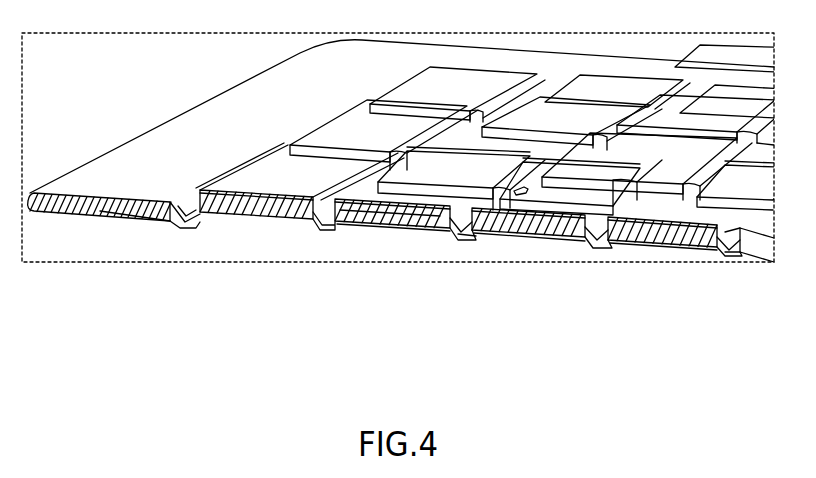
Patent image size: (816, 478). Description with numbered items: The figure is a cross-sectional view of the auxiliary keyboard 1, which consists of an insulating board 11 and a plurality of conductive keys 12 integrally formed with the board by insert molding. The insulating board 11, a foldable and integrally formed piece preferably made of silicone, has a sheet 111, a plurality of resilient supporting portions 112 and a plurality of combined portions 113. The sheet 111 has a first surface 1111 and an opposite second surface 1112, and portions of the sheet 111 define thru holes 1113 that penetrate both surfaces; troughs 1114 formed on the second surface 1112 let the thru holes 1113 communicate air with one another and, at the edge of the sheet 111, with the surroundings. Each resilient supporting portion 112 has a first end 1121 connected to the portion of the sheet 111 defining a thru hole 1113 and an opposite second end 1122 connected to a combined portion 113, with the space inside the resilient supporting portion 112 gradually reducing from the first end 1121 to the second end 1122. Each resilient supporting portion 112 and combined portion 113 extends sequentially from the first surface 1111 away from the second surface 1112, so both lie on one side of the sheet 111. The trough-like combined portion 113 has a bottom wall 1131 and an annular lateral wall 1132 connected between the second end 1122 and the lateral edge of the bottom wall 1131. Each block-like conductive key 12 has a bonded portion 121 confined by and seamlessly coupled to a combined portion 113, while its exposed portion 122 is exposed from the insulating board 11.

The auxiliary keyboard 1 is at (60, 70).
The insulating board 11 is at (194, 141).
The sheet 111 is at (135, 283).
The first surface 1111 is at (140, 222).
The second surface 1112 is at (174, 224).
The thru holes 1113 is at (197, 219).
The conductive key 12 is at (386, 286).
The bonded portion 121 is at (393, 229).
The exposed portion 122 is at (357, 228).
The resilient supporting portion 112 is at (502, 290).
The first end 1121 is at (462, 241).
The second end 1122 is at (479, 242).
The troughs 1114 is at (533, 243).
The combined portion 113 is at (664, 295).
The bottom wall 1131 is at (561, 244).
The annular lateral wall 1132 is at (590, 248).